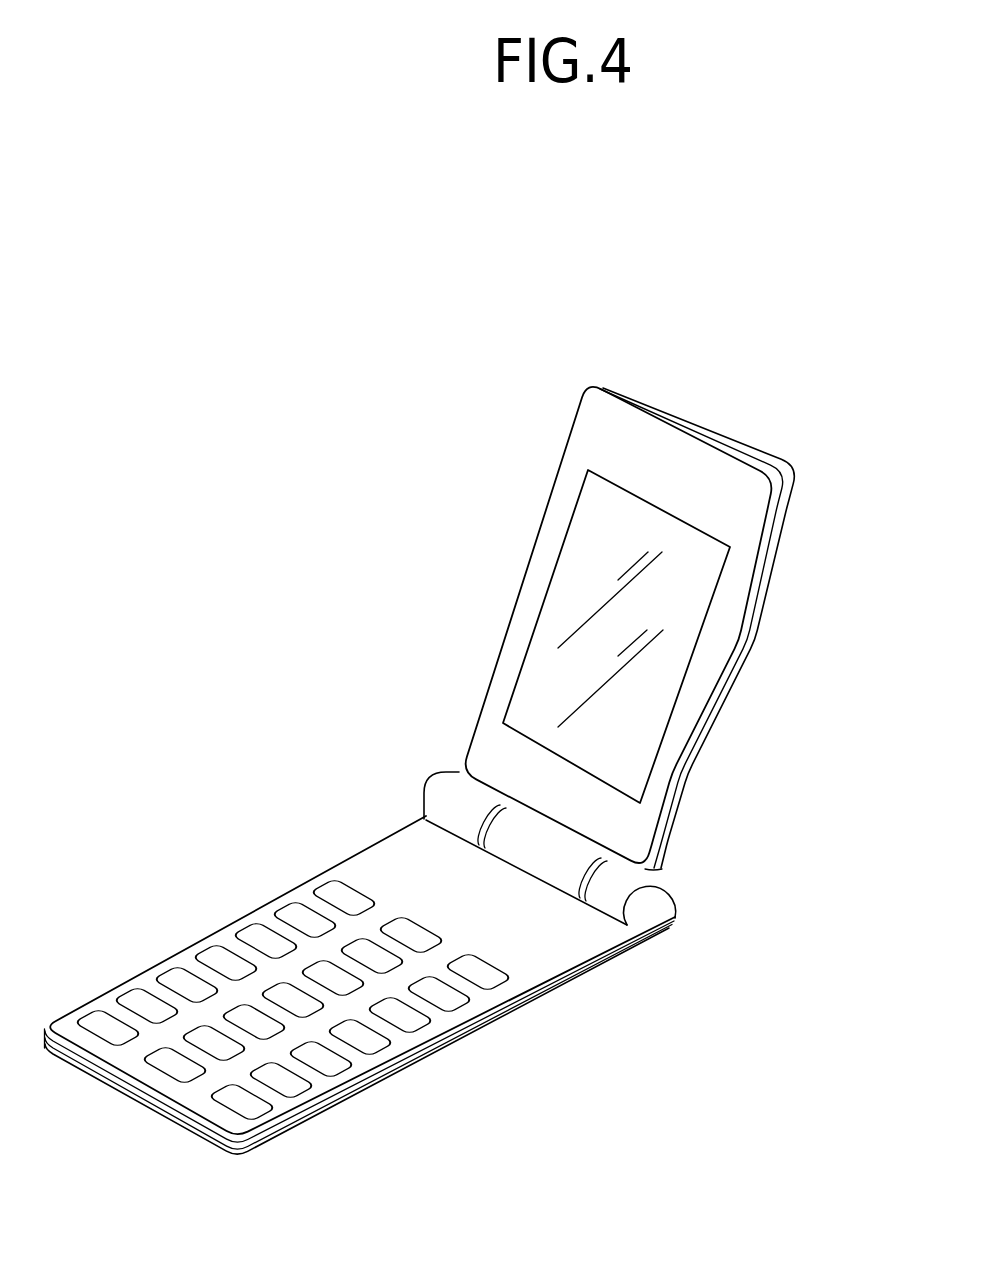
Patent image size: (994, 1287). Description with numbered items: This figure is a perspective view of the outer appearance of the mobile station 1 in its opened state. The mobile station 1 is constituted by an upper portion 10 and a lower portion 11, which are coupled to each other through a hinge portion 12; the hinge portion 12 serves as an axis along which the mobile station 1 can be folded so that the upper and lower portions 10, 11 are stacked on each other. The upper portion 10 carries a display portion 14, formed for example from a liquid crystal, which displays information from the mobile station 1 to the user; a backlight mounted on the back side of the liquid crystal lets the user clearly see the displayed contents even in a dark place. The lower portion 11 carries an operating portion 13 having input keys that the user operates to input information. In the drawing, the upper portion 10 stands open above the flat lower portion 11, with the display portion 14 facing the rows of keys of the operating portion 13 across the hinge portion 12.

The mobile station 1 is at (718, 378).
The upper portion 10 is at (678, 741).
The lower portion 11 is at (543, 962).
The hinge portion 12 is at (655, 906).
The operating portion 13 is at (280, 910).
The display portion 14 is at (572, 600).